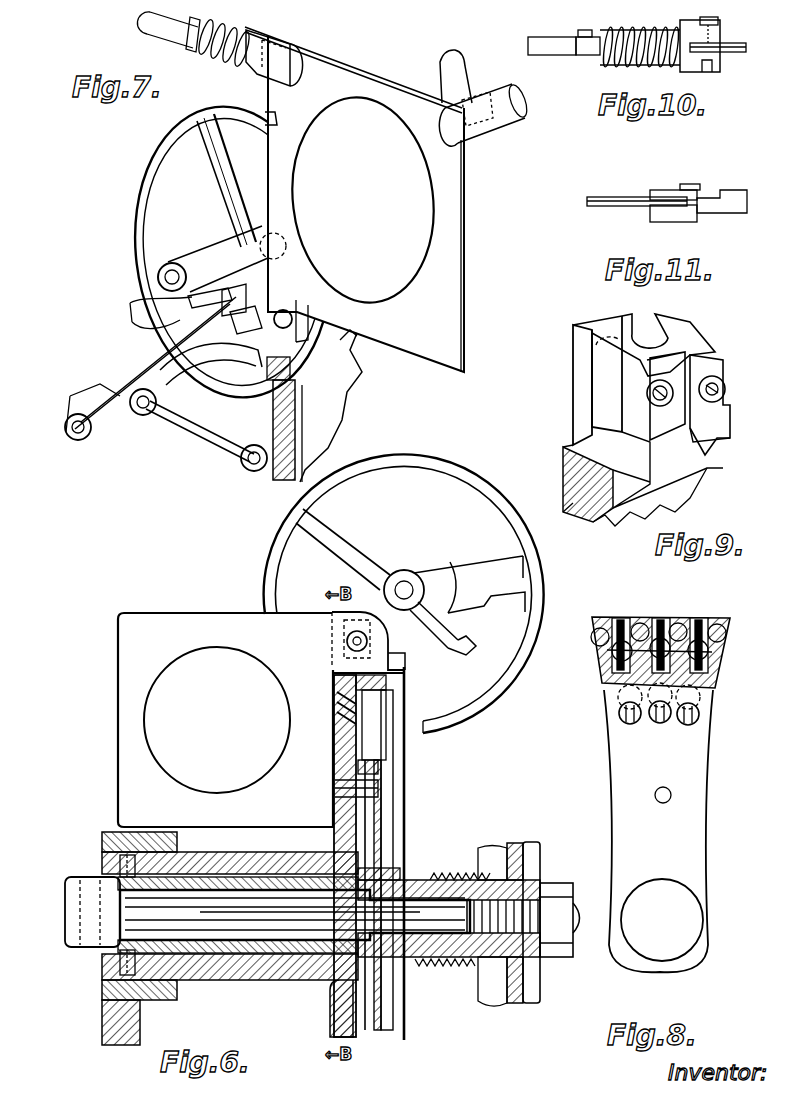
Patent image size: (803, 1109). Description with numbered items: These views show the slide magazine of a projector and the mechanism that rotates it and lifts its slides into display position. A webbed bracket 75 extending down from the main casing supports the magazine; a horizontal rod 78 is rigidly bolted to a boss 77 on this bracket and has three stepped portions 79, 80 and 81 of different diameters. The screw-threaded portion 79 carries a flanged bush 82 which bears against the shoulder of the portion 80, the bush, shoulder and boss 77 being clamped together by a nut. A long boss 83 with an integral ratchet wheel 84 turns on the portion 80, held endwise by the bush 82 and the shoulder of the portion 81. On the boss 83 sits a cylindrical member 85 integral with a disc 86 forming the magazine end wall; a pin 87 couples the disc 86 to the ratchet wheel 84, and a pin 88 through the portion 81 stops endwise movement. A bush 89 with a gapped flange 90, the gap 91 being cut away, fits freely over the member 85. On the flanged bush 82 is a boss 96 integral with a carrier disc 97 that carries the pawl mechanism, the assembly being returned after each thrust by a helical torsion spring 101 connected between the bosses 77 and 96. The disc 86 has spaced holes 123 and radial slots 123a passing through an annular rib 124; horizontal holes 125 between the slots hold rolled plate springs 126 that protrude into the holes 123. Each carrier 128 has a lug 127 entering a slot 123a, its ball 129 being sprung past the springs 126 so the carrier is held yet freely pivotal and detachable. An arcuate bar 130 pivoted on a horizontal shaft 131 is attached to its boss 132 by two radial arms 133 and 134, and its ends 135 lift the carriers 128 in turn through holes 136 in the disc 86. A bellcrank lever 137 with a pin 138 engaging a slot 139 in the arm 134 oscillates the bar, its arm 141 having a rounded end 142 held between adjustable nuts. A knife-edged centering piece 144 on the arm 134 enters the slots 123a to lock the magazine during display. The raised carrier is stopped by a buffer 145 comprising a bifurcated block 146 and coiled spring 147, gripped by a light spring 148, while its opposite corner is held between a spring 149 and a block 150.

In FIG. 6, the webbed bracket 75 is at (492, 843).
In FIG. 6, the boss 77 is at (540, 880).
In FIG. 6, the horizontal rod 78 is at (548, 945).
In FIG. 6, the screw-threaded portion 79 is at (430, 878).
In FIG. 6, the rod portion 80 is at (290, 888).
In FIG. 6, the rod portion 81 is at (72, 880).
In FIG. 6, the flanged bush 82 is at (420, 965).
In FIG. 6, the long boss 83 is at (272, 980).
In FIG. 6, the ratchet wheel 84 is at (385, 765).
In FIG. 6, the cylindrical member 85 is at (232, 852).
In FIG. 6, the disc 86 is at (340, 742).
In FIG. 6, the pin 87 is at (337, 785).
In FIG. 6, the pin 88 is at (120, 962).
In FIG. 6, the bush 89 is at (150, 1000).
In FIG. 6, the flange 90 is at (102, 1032).
In FIG. 6, the gap 91 is at (108, 832).
In FIG. 6, the boss 96 is at (425, 875).
In FIG. 6, the carrier disc 97 is at (400, 800).
In FIG. 6, the helical torsion spring 101 is at (468, 958).
In FIG. 9, the holes 123 is at (680, 332).
In FIG. 8, the holes 123 is at (660, 612).
In FIG. 6, the holes 123 is at (360, 615).
In FIG. 7, the radial slots 123a is at (348, 396).
In FIG. 9, the radial slots 123a is at (576, 340).
In FIG. 8, the radial slots 123a is at (617, 618).
In FIG. 6, the radial slots 123a is at (395, 660).
In FIG. 9, the annular rib 124 is at (722, 412).
In FIG. 8, the annular rib 124 is at (722, 620).
In FIG. 6, the annular rib 124 is at (380, 630).
In FIG. 9, the horizontal holes 125 is at (645, 400).
In FIG. 8, the horizontal holes 125 is at (722, 655).
In FIG. 9, the rolled plate spring 126 is at (726, 382).
In FIG. 8, the rolled plate spring 126 is at (722, 636).
In FIG. 7, the lug 127 is at (283, 309).
In FIG. 8, the lug 127 is at (718, 690).
In FIG. 7, the carrier 128 is at (455, 250).
In FIG. 10, the carrier 128 is at (742, 48).
In FIG. 11, the carrier 128 is at (616, 195).
In FIG. 6, the carrier 128 is at (125, 658).
In FIG. 7, the ball 129 is at (244, 334).
In FIG. 8, the ball 129 is at (600, 660).
In FIG. 7, the arcuate bar 130 is at (136, 240).
In FIG. 6, the arcuate bar 130 is at (460, 475).
In FIG. 7, the horizontal shaft 131 is at (157, 278).
In FIG. 6, the horizontal shaft 131 is at (420, 580).
In FIG. 7, the boss 132 is at (200, 262).
In FIG. 7, the radial arm 133 is at (222, 180).
In FIG. 6, the radial arm 133 is at (335, 555).
In FIG. 7, the radial arm 134 is at (248, 290).
In FIG. 6, the radial arm 134 is at (469, 584).
In FIG. 7, the ends 135 is at (270, 120).
In FIG. 7, the holes 136 is at (296, 390).
In FIG. 8, the holes 136 is at (676, 722).
In FIG. 6, the holes 136 is at (336, 700).
In FIG. 7, the bellcrank lever 137 is at (130, 353).
In FIG. 7, the pin 138 is at (133, 308).
In FIG. 7, the slot 139 is at (218, 290).
In FIG. 7, the arm 141 is at (200, 440).
In FIG. 7, the rounded end 142 is at (245, 466).
In FIG. 7, the knife-edged centering piece 144 is at (225, 385).
In FIG. 6, the knife-edged centering piece 144 is at (472, 642).
In FIG. 7, the buffer 145 is at (245, 70).
In FIG. 10, the buffer 145 is at (648, 64).
In FIG. 7, the bifurcated block 146 is at (300, 47).
In FIG. 10, the bifurcated block 146 is at (712, 68).
In FIG. 7, the coiled spring 147 is at (185, 40).
In FIG. 10, the coiled spring 147 is at (608, 62).
In FIG. 10, the light spring 148 is at (720, 30).
In FIG. 7, the spring 149 is at (458, 72).
In FIG. 11, the spring 149 is at (672, 190).
In FIG. 7, the block 150 is at (478, 130).
In FIG. 11, the block 150 is at (706, 213).